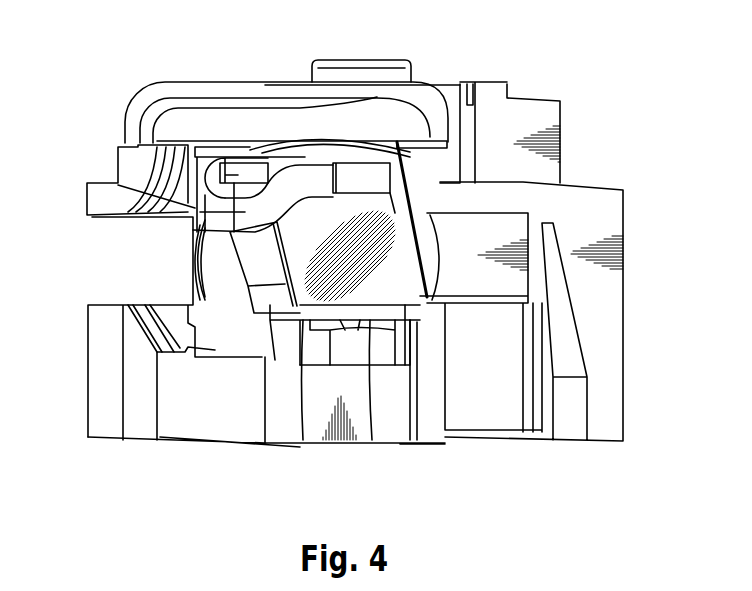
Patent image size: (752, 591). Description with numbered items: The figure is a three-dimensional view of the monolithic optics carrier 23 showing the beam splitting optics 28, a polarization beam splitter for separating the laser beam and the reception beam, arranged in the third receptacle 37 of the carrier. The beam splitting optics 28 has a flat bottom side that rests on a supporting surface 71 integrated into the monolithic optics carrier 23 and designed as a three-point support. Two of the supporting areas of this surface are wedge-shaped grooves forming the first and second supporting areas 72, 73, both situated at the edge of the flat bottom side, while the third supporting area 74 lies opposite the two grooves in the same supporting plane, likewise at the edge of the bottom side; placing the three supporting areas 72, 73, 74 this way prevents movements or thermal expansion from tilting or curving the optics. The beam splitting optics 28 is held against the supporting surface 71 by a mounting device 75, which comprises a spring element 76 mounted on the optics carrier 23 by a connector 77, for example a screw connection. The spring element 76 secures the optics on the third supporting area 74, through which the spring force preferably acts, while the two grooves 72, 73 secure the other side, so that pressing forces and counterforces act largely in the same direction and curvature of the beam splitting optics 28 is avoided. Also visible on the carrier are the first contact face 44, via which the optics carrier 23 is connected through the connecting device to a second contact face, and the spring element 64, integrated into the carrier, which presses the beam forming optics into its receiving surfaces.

The optics carrier 23 is at (535, 115).
The beam splitting optics 28 is at (390, 273).
The third receptacle 37 is at (300, 313).
The first contact face 44 is at (208, 445).
The spring element 64 is at (305, 93).
The supporting surface 71 is at (362, 313).
The first supporting area 72 is at (300, 312).
The second supporting area 73 is at (413, 313).
The third supporting area 74 is at (333, 173).
The mounting device 75 is at (248, 189).
The spring element 76 is at (212, 207).
The connector 77 is at (375, 72).